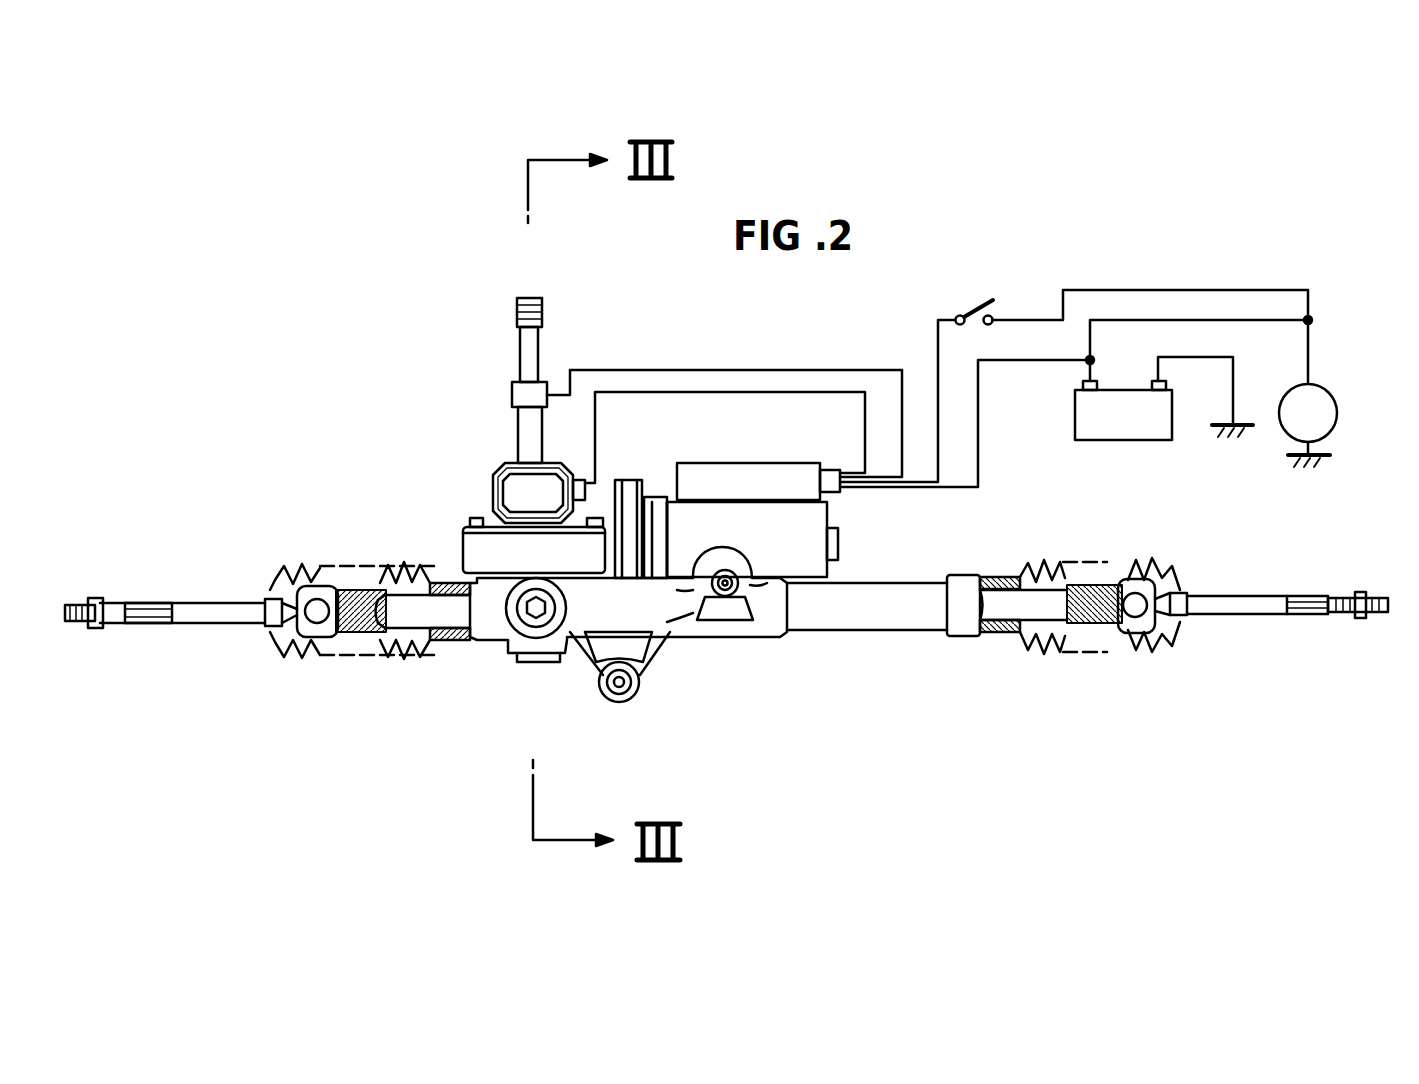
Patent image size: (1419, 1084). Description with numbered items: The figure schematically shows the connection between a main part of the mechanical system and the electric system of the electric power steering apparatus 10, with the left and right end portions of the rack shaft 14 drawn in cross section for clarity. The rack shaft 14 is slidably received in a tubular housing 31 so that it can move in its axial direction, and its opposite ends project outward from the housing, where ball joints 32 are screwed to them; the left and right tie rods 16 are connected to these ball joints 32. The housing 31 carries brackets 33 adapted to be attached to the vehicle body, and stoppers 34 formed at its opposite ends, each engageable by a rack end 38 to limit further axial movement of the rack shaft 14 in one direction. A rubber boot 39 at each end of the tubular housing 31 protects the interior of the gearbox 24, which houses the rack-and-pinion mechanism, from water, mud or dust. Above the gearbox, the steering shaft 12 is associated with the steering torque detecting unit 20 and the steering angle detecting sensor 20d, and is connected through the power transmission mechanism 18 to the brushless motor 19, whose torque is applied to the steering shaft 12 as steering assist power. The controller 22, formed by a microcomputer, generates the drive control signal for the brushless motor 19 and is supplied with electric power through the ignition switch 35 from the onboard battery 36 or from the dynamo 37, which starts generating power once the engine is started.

The electric power steering apparatus 10 is at (480, 400).
The steering shaft 12 is at (532, 368).
The rack shaft 14 is at (993, 610).
The tie rods 16 is at (247, 624).
The power transmission mechanism 18 is at (470, 545).
The brushless motor 19 is at (812, 568).
The steering torque detecting unit 20 is at (523, 495).
The steering angle detecting sensor 20d is at (520, 380).
The controller 22 is at (725, 472).
The gearbox 24 is at (573, 666).
The tubular housing 31 is at (772, 637).
The ball joints 32 is at (340, 637).
The brackets 33 is at (725, 597).
The stoppers 34 is at (432, 645).
The ignition switch 35 is at (977, 298).
The onboard battery 36 is at (1128, 442).
The dynamo 37 is at (1338, 413).
The rack end 38 is at (347, 628).
The rubber boot 39 is at (408, 575).